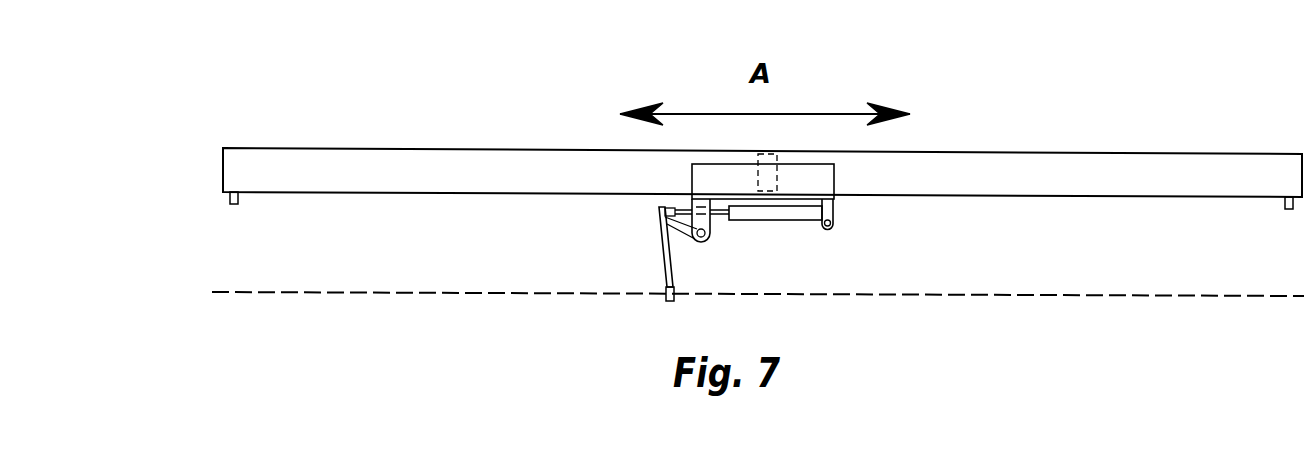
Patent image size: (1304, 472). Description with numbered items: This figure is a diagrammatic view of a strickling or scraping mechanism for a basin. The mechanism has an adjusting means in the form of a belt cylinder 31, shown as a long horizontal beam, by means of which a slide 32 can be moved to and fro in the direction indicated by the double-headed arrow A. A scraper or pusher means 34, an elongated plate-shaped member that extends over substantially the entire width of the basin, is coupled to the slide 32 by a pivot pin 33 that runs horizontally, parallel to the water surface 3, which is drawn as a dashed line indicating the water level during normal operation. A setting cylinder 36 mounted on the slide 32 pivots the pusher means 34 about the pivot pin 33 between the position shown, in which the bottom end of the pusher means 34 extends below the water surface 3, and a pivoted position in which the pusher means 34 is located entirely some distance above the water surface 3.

The belt cylinder 31 is at (470, 165).
The slide 32 is at (795, 178).
The pivot pin 33 is at (703, 236).
The pusher means 34 is at (667, 261).
The setting cylinder 36 is at (797, 218).
The water surface 3 is at (795, 294).